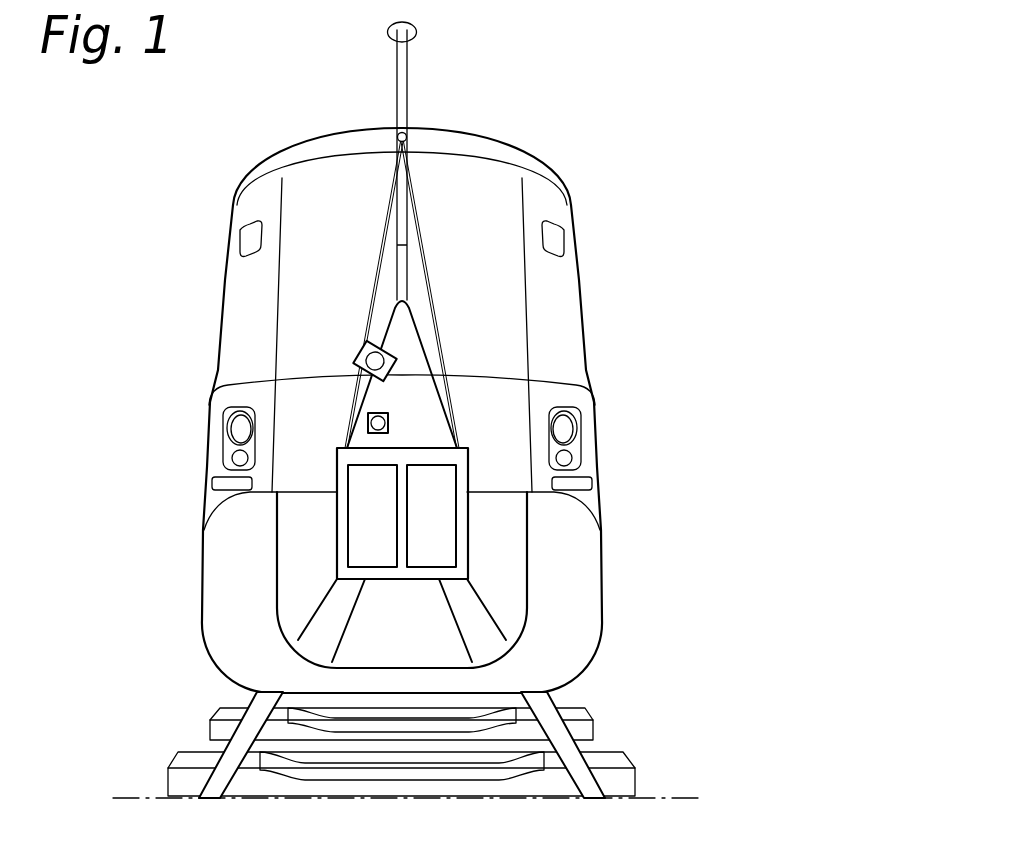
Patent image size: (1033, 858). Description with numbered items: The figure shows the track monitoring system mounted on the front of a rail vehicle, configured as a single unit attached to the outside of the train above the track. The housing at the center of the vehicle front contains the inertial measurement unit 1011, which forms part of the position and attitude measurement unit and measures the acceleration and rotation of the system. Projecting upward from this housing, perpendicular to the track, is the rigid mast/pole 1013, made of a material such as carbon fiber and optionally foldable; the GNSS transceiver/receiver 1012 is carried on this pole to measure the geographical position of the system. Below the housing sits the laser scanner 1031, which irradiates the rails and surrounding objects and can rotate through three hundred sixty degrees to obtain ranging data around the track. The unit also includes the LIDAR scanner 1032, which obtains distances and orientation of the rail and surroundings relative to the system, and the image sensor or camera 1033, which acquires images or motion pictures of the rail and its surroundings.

The inertial measurement unit 1011 is at (390, 519).
The GNSS transceiver/receiver 1012 is at (432, 81).
The mast/pole 1013 is at (413, 137).
The laser scanner 1031 is at (326, 641).
The 360 degree LIDAR scanner 1032 is at (410, 355).
The image sensor or camera 1033 is at (404, 420).